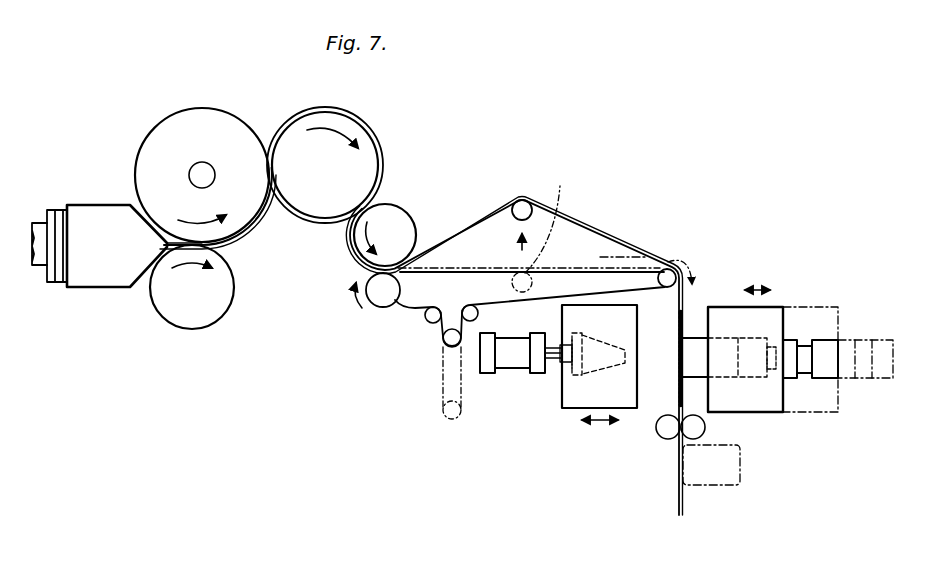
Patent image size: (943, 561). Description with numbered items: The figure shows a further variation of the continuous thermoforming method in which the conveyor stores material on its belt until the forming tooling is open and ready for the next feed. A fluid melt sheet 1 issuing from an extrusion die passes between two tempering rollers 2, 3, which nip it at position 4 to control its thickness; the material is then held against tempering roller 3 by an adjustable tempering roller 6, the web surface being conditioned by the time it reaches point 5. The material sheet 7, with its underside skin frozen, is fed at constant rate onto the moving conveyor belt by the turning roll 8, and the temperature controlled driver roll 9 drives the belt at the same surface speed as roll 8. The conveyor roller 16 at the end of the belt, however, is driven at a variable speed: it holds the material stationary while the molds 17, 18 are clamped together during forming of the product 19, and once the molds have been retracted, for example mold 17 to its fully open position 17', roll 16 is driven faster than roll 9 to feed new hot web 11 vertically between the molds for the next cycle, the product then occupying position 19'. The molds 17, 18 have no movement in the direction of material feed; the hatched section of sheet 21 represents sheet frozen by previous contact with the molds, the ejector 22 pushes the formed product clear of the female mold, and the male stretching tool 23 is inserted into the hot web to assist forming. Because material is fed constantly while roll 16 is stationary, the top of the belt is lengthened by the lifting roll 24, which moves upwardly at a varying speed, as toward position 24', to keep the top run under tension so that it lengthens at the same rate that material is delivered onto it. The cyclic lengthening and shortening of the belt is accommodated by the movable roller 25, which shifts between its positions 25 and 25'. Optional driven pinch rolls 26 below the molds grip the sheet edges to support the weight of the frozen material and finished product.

The fluid melt sheet 1 is at (167, 250).
The tempering roller 2 is at (177, 315).
The tempering roller 3 is at (183, 120).
The nip position 4 is at (230, 245).
The point on web 5 is at (287, 123).
The adjustable tempering roller 6 is at (321, 118).
The material sheet 7 is at (380, 178).
The turning roll 8 is at (407, 222).
The temperature controlled driver roll 9 is at (377, 311).
The web 11 is at (691, 311).
The conveyor roller 16 is at (668, 270).
The mold 17 is at (773, 378).
The fully open mold position 17' is at (838, 387).
The mold 18 is at (577, 393).
The formed product 19 is at (729, 313).
The formed product position 19' is at (713, 490).
The hatched section of sheet 21 is at (694, 392).
The ejector 22 is at (784, 334).
The male stretching tool 23 is at (562, 378).
The lifting roll 24 is at (508, 201).
The lifting roll position 24' is at (529, 227).
The movable roller 25 is at (435, 341).
The movable roller position 25' is at (424, 402).
The driven pinch rolls 26 is at (691, 437).